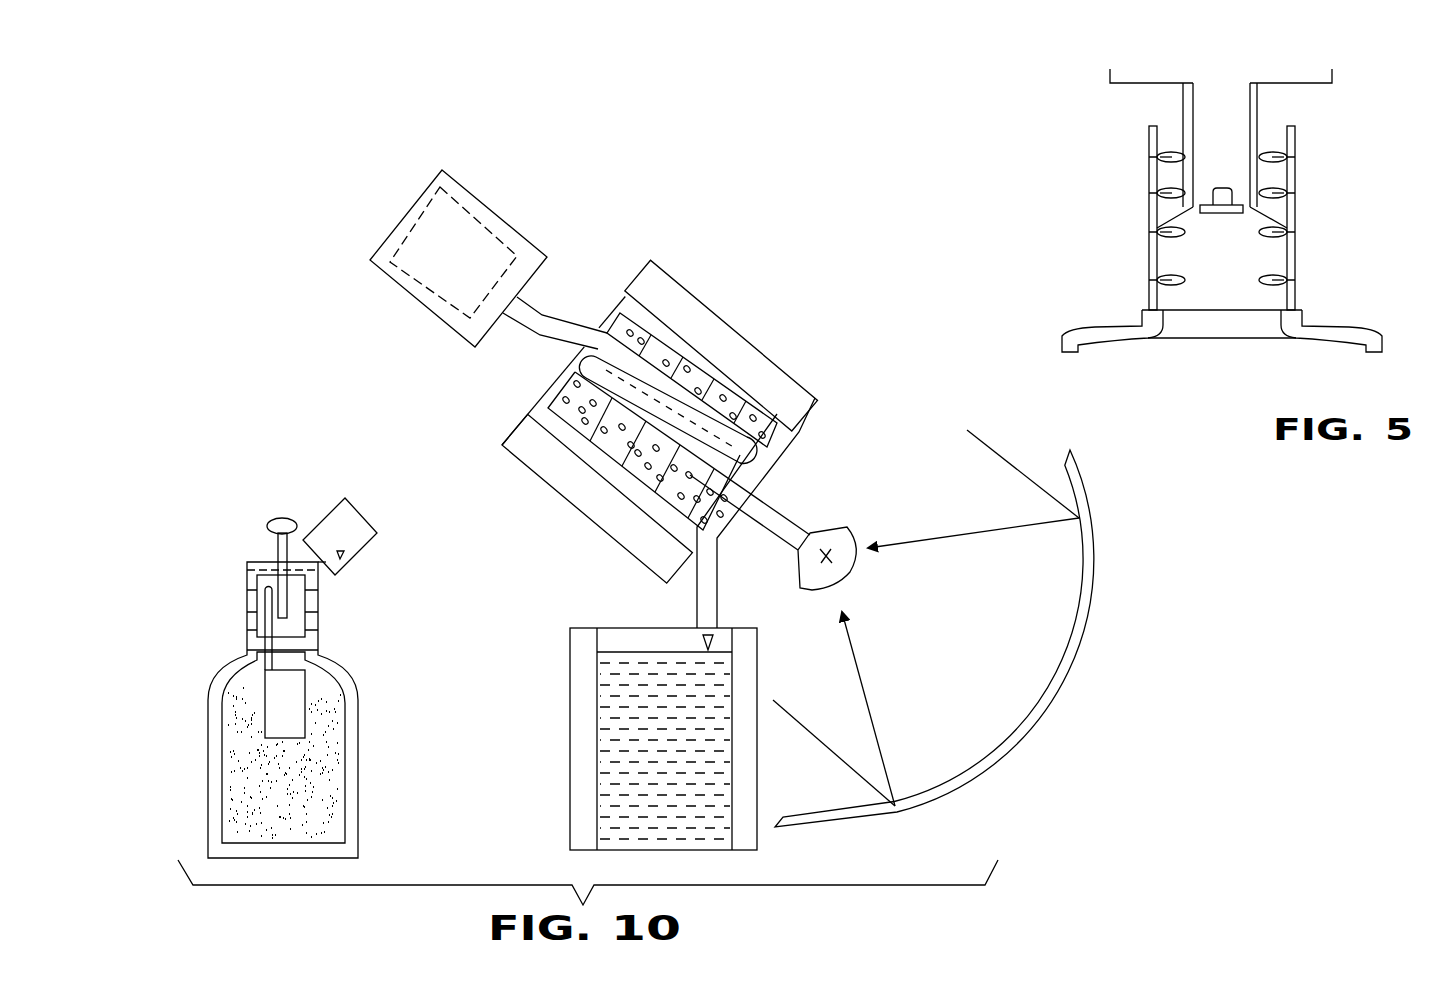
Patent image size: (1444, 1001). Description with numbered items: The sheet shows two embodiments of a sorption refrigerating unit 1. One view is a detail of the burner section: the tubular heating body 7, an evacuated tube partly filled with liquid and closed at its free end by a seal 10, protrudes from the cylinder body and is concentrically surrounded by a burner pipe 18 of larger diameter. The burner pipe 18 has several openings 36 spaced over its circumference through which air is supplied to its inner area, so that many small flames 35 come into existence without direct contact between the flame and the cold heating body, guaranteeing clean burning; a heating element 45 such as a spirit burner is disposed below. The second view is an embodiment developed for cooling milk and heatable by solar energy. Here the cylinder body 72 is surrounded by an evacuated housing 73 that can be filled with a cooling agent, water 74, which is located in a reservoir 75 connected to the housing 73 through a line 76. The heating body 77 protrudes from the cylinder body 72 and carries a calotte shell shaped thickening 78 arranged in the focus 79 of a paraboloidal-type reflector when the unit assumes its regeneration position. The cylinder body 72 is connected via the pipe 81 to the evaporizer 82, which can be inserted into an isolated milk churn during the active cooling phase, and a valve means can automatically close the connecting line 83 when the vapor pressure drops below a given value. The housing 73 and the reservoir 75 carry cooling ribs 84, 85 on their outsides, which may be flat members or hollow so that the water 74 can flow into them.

In FIG. 10, the sorption refrigerating unit 1 is at (716, 270).
In FIG. 5, the tubular heating body 7 is at (1257, 100).
In FIG. 5, the seal 10 is at (1222, 214).
In FIG. 5, the burner pipe 18 is at (1297, 173).
In FIG. 5, the flame 35 is at (1180, 282).
In FIG. 5, the openings 36 is at (1297, 278).
In FIG. 5, the heating element 45 is at (1343, 330).
In FIG. 10, the cylinder body 72 is at (764, 428).
In FIG. 10, the housing 73 is at (792, 459).
In FIG. 10, the water 74 is at (720, 771).
In FIG. 10, the reservoir 75 is at (637, 850).
In FIG. 10, the line 76 is at (720, 585).
In FIG. 10, the heating body 77 is at (778, 508).
In FIG. 10, the calotte shell shaped thickening 78 is at (826, 580).
In FIG. 10, the focus 79 is at (845, 527).
In FIG. 10, the pipe 81 is at (662, 378).
In FIG. 10, the evaporizer 82 is at (483, 203).
In FIG. 10, the connecting line 83 is at (567, 318).
In FIG. 10, the cooling ribs 84 is at (775, 382).
In FIG. 10, the cooling ribs 85 is at (1040, 723).